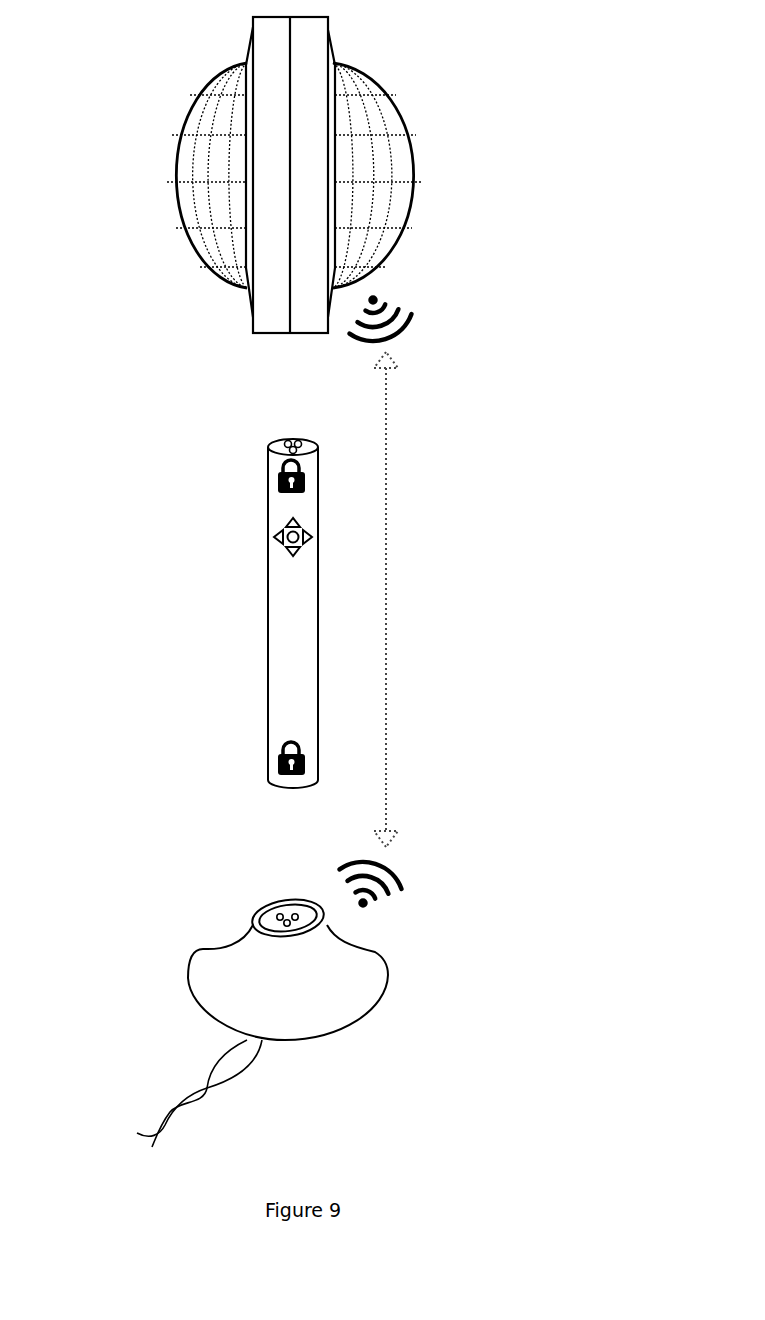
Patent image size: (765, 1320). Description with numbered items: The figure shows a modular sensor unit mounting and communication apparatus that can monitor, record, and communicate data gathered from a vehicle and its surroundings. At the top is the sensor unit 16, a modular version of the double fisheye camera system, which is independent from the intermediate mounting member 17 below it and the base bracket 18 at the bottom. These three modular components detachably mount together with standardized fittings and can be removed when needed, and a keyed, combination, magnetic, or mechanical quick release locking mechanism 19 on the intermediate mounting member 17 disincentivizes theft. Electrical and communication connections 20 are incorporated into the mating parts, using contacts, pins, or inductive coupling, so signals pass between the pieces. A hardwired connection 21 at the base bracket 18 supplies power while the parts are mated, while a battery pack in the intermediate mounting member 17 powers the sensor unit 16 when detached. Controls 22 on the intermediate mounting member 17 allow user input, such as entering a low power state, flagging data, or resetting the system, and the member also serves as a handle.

The sensor unit 16 is at (242, 293).
The intermediate mounting member 17 is at (262, 610).
The base bracket 18 is at (187, 1003).
The quick release locking mechanism 19 is at (308, 482).
The electrical and communication connections 20 is at (277, 453).
The hardwired connection 21 is at (213, 1088).
The controls 22 is at (270, 537).